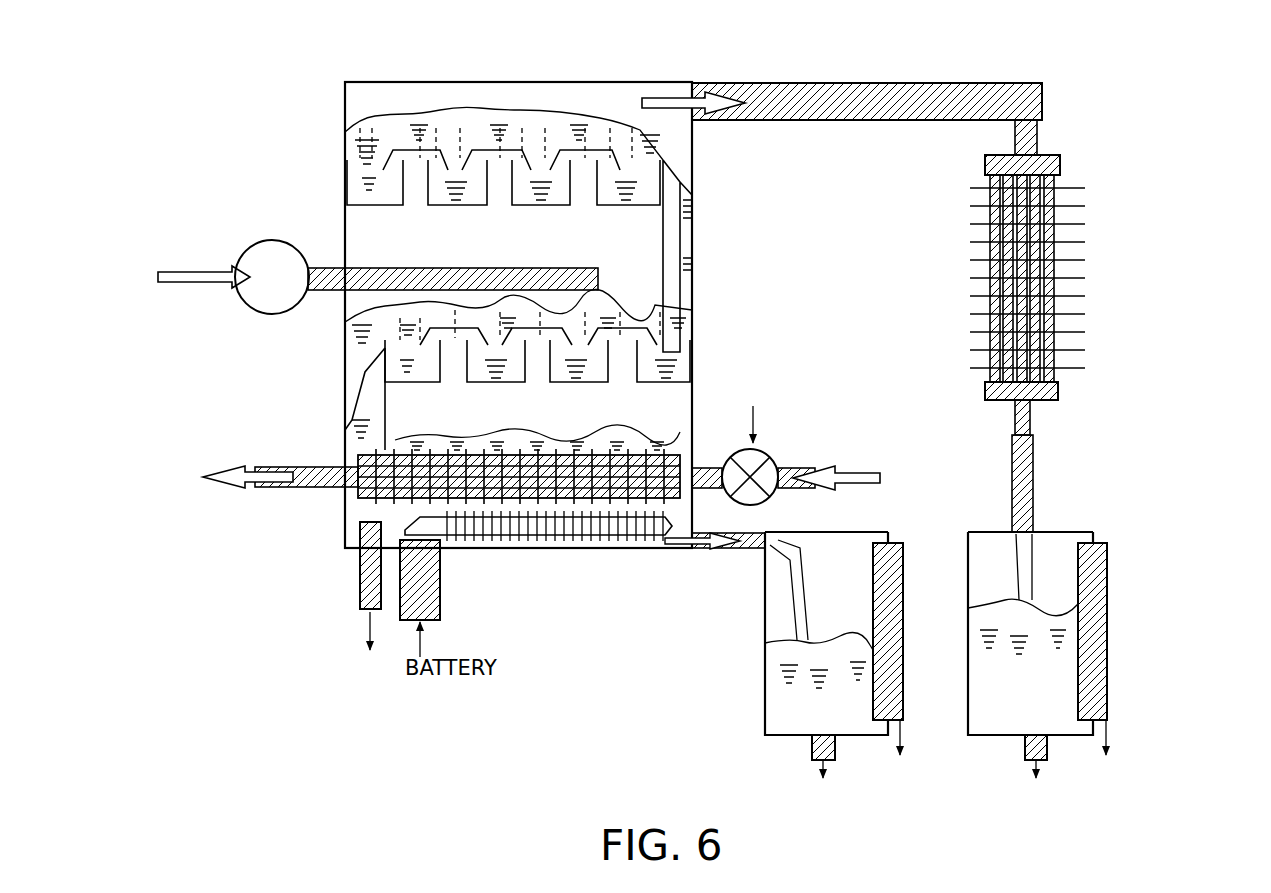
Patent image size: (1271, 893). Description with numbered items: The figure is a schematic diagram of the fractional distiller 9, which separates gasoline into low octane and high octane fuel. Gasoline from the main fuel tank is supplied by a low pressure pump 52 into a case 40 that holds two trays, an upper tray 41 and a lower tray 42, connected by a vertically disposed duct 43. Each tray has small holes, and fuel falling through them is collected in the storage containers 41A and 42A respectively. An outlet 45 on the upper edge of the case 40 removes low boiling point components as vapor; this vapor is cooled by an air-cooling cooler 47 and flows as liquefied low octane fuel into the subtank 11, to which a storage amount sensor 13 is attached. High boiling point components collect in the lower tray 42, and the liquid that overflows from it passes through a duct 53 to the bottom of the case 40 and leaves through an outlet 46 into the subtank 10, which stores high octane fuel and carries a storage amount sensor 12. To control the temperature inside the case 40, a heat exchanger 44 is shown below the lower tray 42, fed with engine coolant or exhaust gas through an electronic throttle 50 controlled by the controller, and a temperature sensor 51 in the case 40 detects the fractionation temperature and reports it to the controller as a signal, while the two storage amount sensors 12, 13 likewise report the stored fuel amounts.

The fractional distiller 9 is at (517, 73).
The case 40 is at (458, 82).
The tray 41 is at (398, 215).
The storage container 41A is at (490, 205).
The tray 42 is at (448, 393).
The storage container 42A is at (525, 372).
The duct 43 is at (660, 250).
The heat exchanger 44 is at (580, 438).
The outlet 45 is at (690, 122).
The outlet 46 is at (690, 520).
The air-cooling cooler 47 is at (985, 314).
The electronic throttle 50 is at (770, 468).
The temperature sensor 51 is at (358, 592).
The low pressure pump 52 is at (278, 313).
The duct 53 is at (386, 417).
The subtank 10 is at (760, 592).
The subtank 11 is at (1000, 530).
The storage amount sensor 12 is at (905, 700).
The storage amount sensor 13 is at (1107, 690).